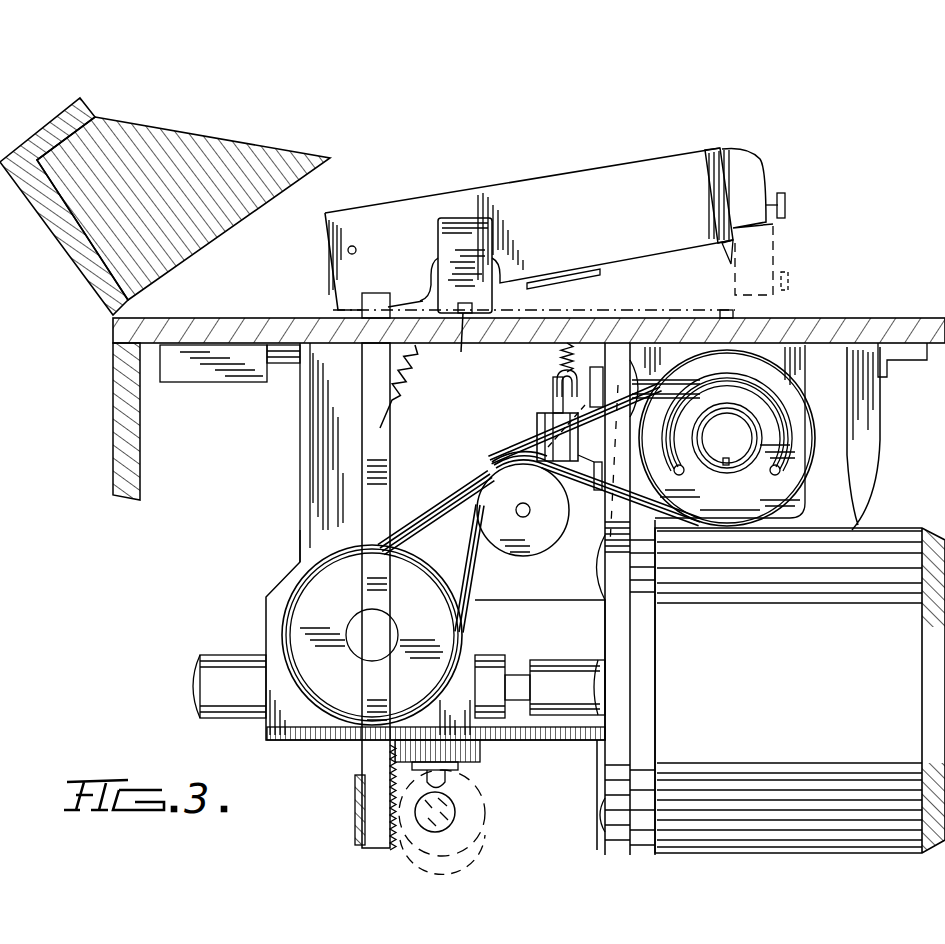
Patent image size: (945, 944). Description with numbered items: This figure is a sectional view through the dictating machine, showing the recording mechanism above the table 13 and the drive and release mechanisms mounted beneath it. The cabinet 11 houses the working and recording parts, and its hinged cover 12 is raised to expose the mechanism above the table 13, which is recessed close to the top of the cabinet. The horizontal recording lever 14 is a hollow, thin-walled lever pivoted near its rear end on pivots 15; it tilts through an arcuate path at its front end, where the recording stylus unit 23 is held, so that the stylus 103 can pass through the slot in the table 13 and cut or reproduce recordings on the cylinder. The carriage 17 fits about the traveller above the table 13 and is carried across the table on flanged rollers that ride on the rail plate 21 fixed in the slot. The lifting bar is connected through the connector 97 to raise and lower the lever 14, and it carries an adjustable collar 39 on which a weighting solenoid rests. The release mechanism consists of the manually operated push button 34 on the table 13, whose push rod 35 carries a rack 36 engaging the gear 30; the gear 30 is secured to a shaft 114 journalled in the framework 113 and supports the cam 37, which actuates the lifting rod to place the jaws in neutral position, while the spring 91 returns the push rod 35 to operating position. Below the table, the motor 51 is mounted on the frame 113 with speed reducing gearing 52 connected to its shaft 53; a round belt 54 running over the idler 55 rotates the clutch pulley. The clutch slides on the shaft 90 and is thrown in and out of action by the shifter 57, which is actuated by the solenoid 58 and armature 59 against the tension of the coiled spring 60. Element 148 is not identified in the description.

The cabinet 11 is at (113, 406).
The cover 12 is at (56, 238).
The table 13 is at (894, 334).
The horizontal recording lever 14 is at (592, 179).
The pivots 15 is at (347, 250).
The carriage 17 is at (465, 218).
The rail plate 21 is at (461, 350).
The recording stylus unit 23 is at (752, 173).
The gear 30 is at (470, 797).
The push button 34 is at (362, 294).
The push rod 35 is at (362, 495).
The rack 36 is at (383, 850).
The cam 37 is at (440, 852).
The collar 39 is at (481, 755).
The motor 51 is at (800, 690).
The speed reducing gearing 52 is at (266, 600).
The shaft 53 is at (513, 675).
The round belt 54 is at (445, 503).
The idler 55 is at (530, 513).
The shifter 57 is at (672, 392).
The solenoid 58 is at (569, 447).
The armature 59 is at (553, 393).
The coiled spring 60 is at (561, 350).
The shaft 90 is at (727, 424).
The spring 91 is at (414, 388).
The connector 97 is at (600, 279).
The stylus 103 is at (722, 252).
The framework 113 is at (882, 437).
The shaft 114 is at (452, 818).
The drive pulley 148 is at (727, 472).